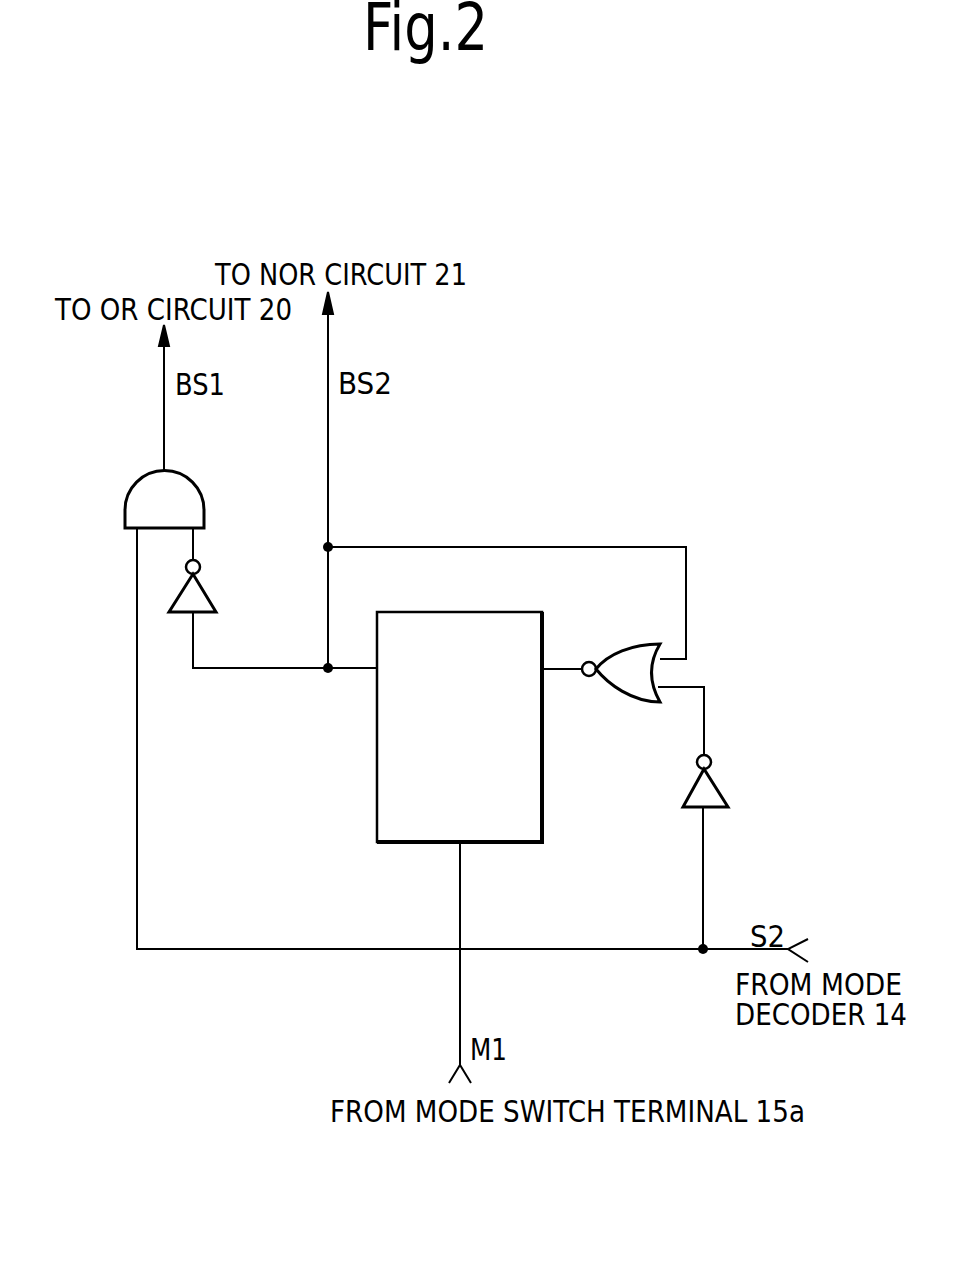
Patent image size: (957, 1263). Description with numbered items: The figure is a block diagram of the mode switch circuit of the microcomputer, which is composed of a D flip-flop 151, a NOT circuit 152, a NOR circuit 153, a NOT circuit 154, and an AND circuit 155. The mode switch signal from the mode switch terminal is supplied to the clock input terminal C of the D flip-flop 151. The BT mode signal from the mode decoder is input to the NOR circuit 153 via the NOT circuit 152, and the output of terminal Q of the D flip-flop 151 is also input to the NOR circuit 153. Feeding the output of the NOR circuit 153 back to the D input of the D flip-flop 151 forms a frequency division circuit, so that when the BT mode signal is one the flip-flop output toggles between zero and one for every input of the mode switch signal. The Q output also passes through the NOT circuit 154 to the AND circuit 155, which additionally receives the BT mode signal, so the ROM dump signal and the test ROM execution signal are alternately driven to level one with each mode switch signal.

The D flip-flop 151 is at (538, 597).
The NOT circuit 152 is at (722, 779).
The NOR circuit 153 is at (634, 643).
The NOT circuit 154 is at (210, 592).
The AND circuit 155 is at (133, 485).